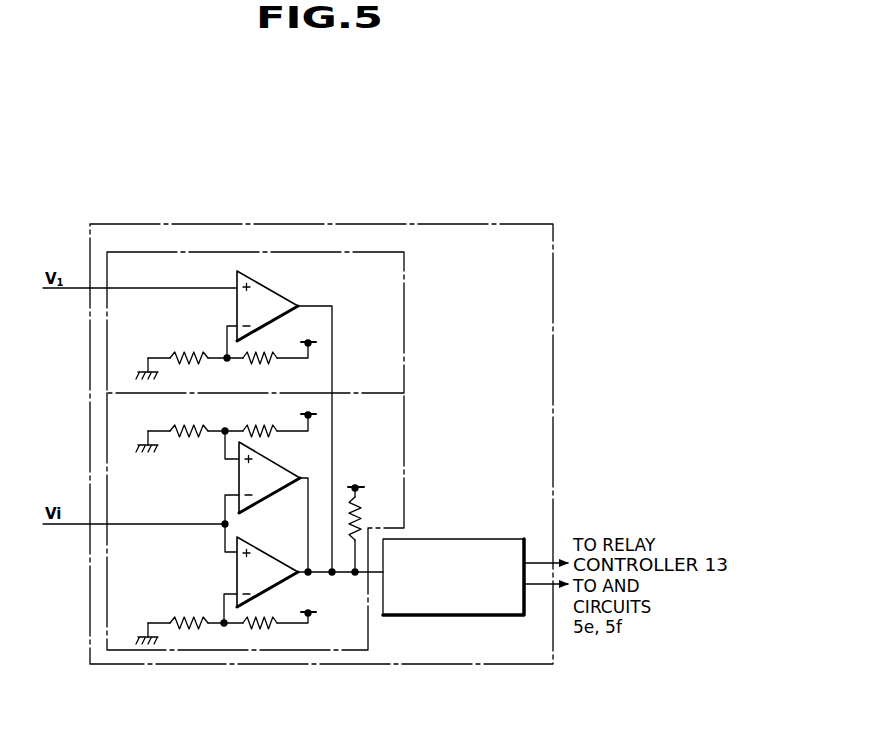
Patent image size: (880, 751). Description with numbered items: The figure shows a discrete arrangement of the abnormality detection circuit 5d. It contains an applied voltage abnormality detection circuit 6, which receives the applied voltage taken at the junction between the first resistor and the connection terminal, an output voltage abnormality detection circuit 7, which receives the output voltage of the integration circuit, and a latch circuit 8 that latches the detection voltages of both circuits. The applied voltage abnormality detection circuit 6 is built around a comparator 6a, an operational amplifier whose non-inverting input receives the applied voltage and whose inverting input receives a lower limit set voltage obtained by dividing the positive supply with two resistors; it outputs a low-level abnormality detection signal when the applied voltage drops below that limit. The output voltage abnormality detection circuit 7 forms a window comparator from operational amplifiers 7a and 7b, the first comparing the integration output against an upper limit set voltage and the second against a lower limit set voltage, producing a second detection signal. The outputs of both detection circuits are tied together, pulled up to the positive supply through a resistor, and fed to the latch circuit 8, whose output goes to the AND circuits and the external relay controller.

The abnormality detection circuit 5d is at (150, 224).
The applied voltage abnormality detection circuit 6 is at (236, 252).
The comparator 6a is at (278, 294).
The output voltage abnormality detection circuit 7 is at (408, 413).
The operational amplifier 7a is at (254, 504).
The operational amplifier 7b is at (262, 551).
The latch circuit 8 is at (487, 539).